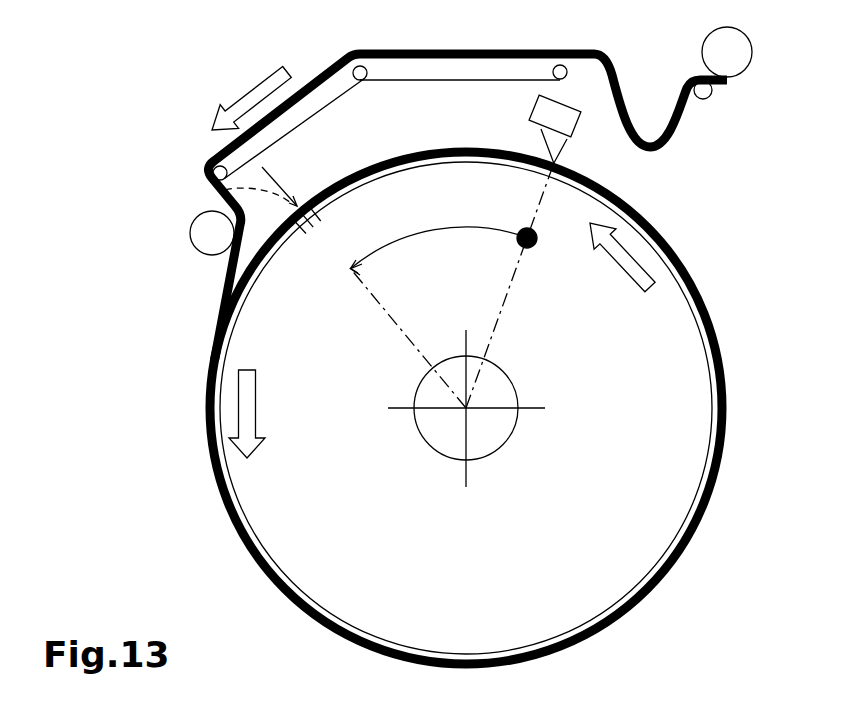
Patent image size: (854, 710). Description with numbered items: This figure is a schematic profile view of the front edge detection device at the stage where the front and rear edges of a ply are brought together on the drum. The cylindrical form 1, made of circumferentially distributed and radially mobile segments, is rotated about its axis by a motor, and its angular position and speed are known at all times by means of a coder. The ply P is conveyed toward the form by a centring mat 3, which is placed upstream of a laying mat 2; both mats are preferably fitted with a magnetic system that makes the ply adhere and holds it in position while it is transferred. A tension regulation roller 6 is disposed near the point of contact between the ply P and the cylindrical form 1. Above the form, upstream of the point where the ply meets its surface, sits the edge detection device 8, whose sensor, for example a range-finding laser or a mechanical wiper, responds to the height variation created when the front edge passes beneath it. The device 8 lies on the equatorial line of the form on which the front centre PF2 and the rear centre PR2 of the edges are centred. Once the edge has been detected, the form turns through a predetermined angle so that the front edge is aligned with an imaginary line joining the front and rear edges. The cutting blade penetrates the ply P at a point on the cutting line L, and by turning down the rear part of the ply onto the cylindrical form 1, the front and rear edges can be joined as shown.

The cylindrical form 1 is at (688, 303).
The laying mat 2 is at (327, 93).
The centring mat 3 is at (442, 80).
The tension regulation roller 6 is at (212, 230).
The edge detection device 8 is at (558, 118).
The cutting line L is at (227, 191).
The ply P is at (228, 505).
The front centre PF2 is at (310, 226).
The rear centre PR2 is at (305, 222).